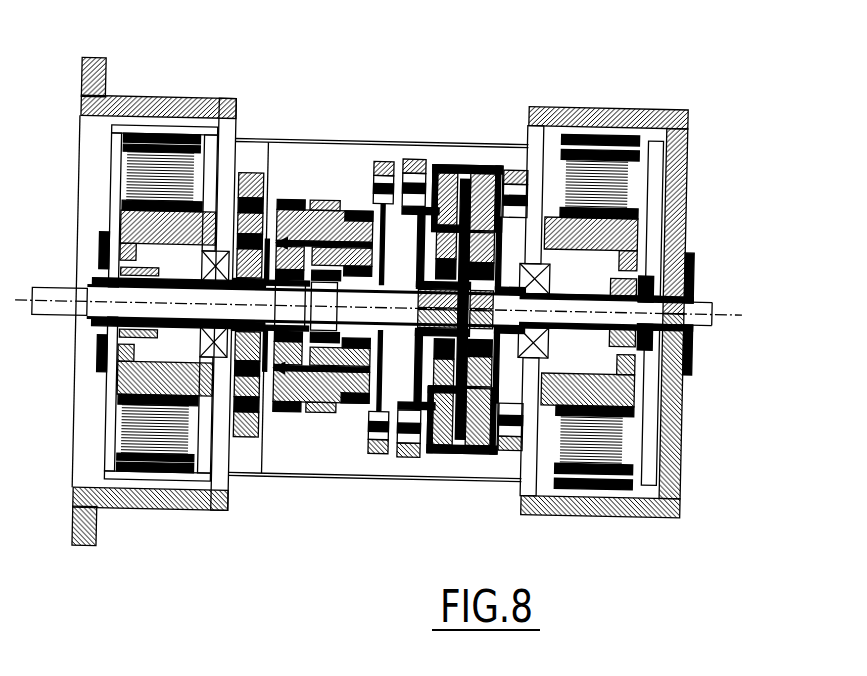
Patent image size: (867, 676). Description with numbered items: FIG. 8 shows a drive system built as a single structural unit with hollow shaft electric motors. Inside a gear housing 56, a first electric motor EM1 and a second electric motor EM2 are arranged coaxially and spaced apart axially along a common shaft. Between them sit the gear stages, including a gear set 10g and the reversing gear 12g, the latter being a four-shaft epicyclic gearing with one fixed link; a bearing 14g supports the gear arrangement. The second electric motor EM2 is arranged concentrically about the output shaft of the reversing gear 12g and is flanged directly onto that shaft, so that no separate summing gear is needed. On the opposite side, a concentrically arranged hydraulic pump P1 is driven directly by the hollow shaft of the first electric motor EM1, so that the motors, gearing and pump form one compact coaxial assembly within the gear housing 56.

The first electric motor EM1 is at (227, 94).
The second electric motor EM2 is at (697, 171).
The gear housing 56 is at (270, 121).
The first planetary gear set 10g is at (291, 141).
The reversing gear 12g is at (523, 140).
The bearing 14g is at (372, 181).
The hydraulic pump P1 is at (248, 417).